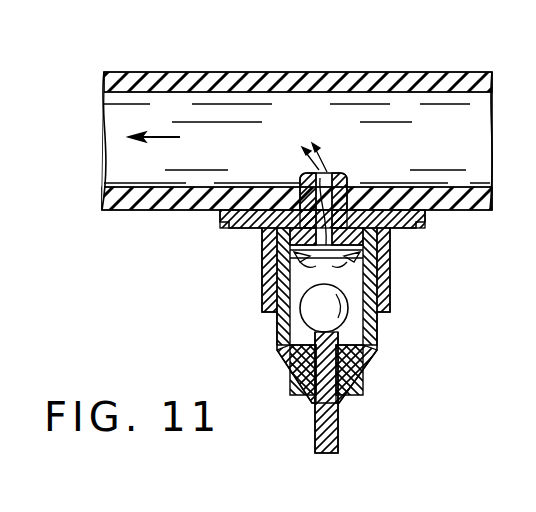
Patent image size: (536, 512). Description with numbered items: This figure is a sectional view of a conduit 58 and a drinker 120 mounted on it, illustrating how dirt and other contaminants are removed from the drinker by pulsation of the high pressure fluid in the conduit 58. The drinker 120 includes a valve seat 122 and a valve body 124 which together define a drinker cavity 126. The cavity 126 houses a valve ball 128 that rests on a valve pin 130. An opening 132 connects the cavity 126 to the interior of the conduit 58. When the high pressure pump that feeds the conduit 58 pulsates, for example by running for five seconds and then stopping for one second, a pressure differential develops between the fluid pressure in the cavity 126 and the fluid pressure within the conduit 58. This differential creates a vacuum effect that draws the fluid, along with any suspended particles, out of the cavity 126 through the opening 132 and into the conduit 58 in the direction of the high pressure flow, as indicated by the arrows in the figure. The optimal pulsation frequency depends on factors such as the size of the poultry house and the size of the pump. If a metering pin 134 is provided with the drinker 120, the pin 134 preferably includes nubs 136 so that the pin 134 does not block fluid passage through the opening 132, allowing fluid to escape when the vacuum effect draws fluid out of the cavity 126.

The conduit 58 is at (420, 72).
The drinker 120 is at (374, 370).
The valve seat 122 is at (372, 362).
The valve body 124 is at (300, 366).
The drinker cavity 126 is at (290, 249).
The valve ball 128 is at (352, 328).
The valve pin 130 is at (328, 433).
The opening 132 is at (312, 165).
The metering pin 134 is at (386, 257).
The nubs 136 is at (277, 284).